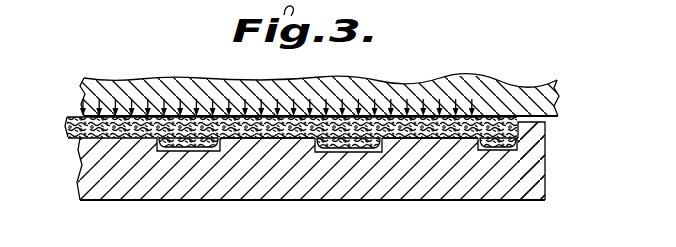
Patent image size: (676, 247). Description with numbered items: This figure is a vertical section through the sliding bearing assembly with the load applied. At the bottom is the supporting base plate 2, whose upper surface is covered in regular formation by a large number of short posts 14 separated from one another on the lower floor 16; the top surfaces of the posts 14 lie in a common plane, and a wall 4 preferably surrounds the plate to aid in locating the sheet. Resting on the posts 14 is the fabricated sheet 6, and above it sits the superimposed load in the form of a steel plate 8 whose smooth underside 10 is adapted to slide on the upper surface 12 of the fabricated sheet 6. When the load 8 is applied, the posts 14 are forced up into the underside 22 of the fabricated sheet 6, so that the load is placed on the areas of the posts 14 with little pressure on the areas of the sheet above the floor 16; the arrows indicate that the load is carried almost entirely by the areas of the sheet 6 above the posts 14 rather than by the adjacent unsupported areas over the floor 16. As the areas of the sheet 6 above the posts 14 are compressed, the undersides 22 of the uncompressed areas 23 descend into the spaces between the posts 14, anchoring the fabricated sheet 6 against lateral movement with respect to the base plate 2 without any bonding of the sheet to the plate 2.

The supporting base plate 2 is at (437, 172).
The wall 4 is at (535, 132).
The fabricated sheet 6 is at (490, 84).
The steel plate 8 is at (415, 97).
The smooth underside 10 is at (510, 117).
The upper surface 12 is at (72, 112).
The short posts 14 is at (260, 138).
The lower floor 16 is at (182, 148).
The underside 22 is at (335, 148).
The uncompressed areas 23 is at (183, 122).